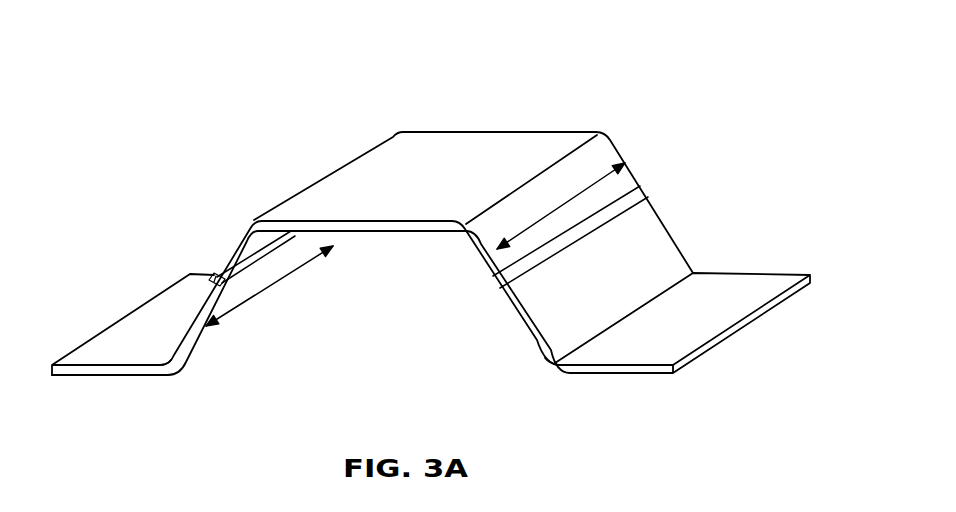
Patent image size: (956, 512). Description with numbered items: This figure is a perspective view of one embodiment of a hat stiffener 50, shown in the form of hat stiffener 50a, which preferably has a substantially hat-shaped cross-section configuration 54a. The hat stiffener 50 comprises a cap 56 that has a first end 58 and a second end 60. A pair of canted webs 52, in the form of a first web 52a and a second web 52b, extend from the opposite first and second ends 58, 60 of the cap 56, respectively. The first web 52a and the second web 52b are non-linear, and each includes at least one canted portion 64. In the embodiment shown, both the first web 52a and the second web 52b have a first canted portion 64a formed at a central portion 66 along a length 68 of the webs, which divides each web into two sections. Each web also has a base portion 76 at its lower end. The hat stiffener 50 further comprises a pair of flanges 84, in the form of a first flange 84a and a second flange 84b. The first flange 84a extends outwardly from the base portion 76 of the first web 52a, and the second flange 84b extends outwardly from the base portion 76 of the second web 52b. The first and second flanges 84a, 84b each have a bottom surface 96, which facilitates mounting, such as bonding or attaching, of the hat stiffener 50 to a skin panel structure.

The hat stiffener 50 is at (412, 66).
The hat stiffener 50a is at (462, 123).
The canted webs 52 is at (250, 222).
The first web 52a is at (202, 355).
The second web 52b is at (540, 362).
The hat-shaped cross-section configuration 54a is at (388, 256).
The cap 56 is at (446, 198).
The first end 58 is at (335, 172).
The second end 60 is at (558, 160).
The canted portion 64 is at (548, 266).
The first canted portion 64a is at (213, 275).
The central portion 66 is at (657, 205).
The length 68 is at (252, 303).
The base portion 76 is at (170, 374).
The flanges 84 is at (115, 312).
The first flange 84a is at (120, 356).
The second flange 84b is at (660, 354).
The bottom surface 96 is at (70, 374).